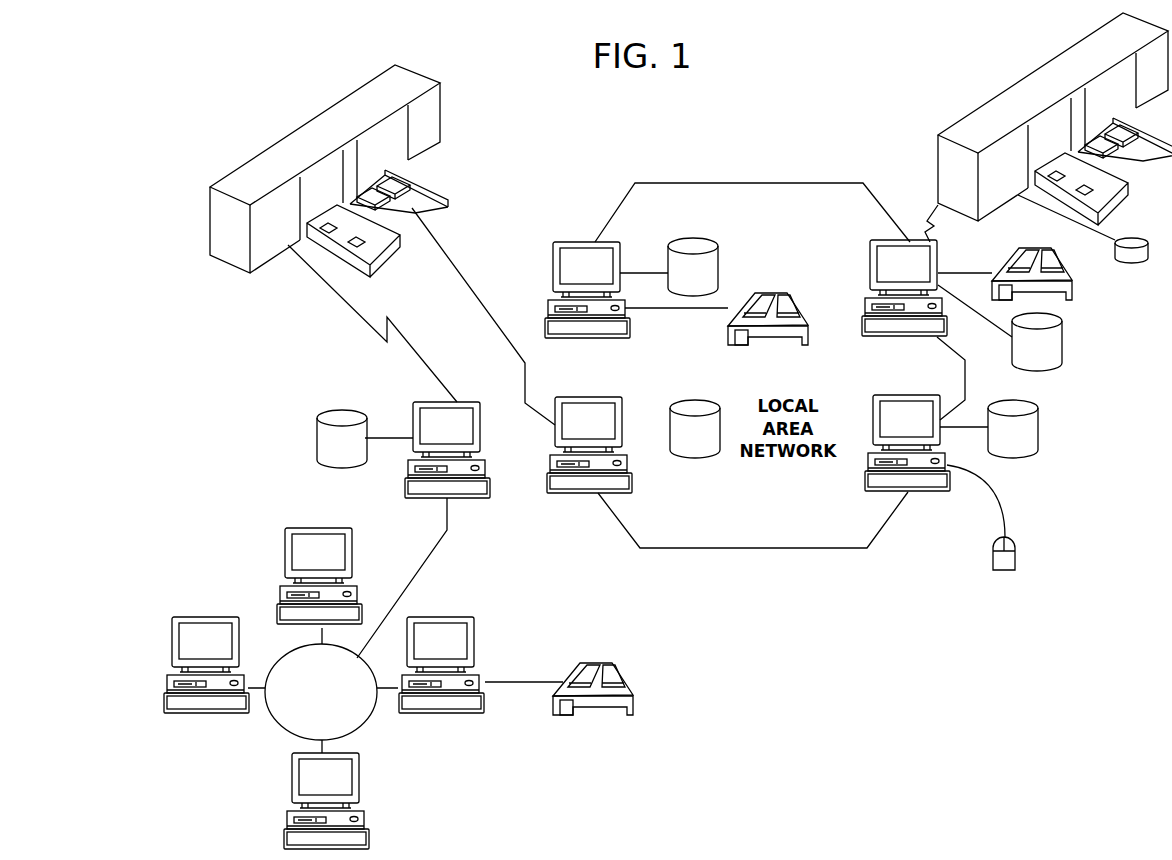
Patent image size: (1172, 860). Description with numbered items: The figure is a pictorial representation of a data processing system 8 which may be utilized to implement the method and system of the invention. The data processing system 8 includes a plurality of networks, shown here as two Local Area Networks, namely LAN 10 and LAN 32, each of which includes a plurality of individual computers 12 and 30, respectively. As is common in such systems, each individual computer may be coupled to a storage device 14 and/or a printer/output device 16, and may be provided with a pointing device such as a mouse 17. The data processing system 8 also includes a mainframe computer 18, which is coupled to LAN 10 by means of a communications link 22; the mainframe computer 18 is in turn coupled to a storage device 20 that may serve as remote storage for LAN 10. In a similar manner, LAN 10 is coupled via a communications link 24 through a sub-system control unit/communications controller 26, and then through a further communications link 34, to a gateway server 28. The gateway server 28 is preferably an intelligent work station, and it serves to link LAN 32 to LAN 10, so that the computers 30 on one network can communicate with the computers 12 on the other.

The data processing system 8 is at (805, 172).
The Local Area Network 10 is at (723, 548).
The individual computer 12 is at (575, 243).
The storage device 14 is at (700, 240).
The printer/output device 16 is at (790, 293).
The mouse 17 is at (1017, 557).
The mainframe computer 18 is at (1015, 85).
The storage device 20 is at (1125, 265).
The communications link 22 is at (928, 222).
The communications link 24 is at (457, 265).
The sub-system control unit/communications controller 26 is at (270, 148).
The gateway server 28 is at (412, 408).
The individual computer 30 is at (283, 552).
The Local Area Network 32 is at (270, 720).
The communications link 34 is at (325, 285).